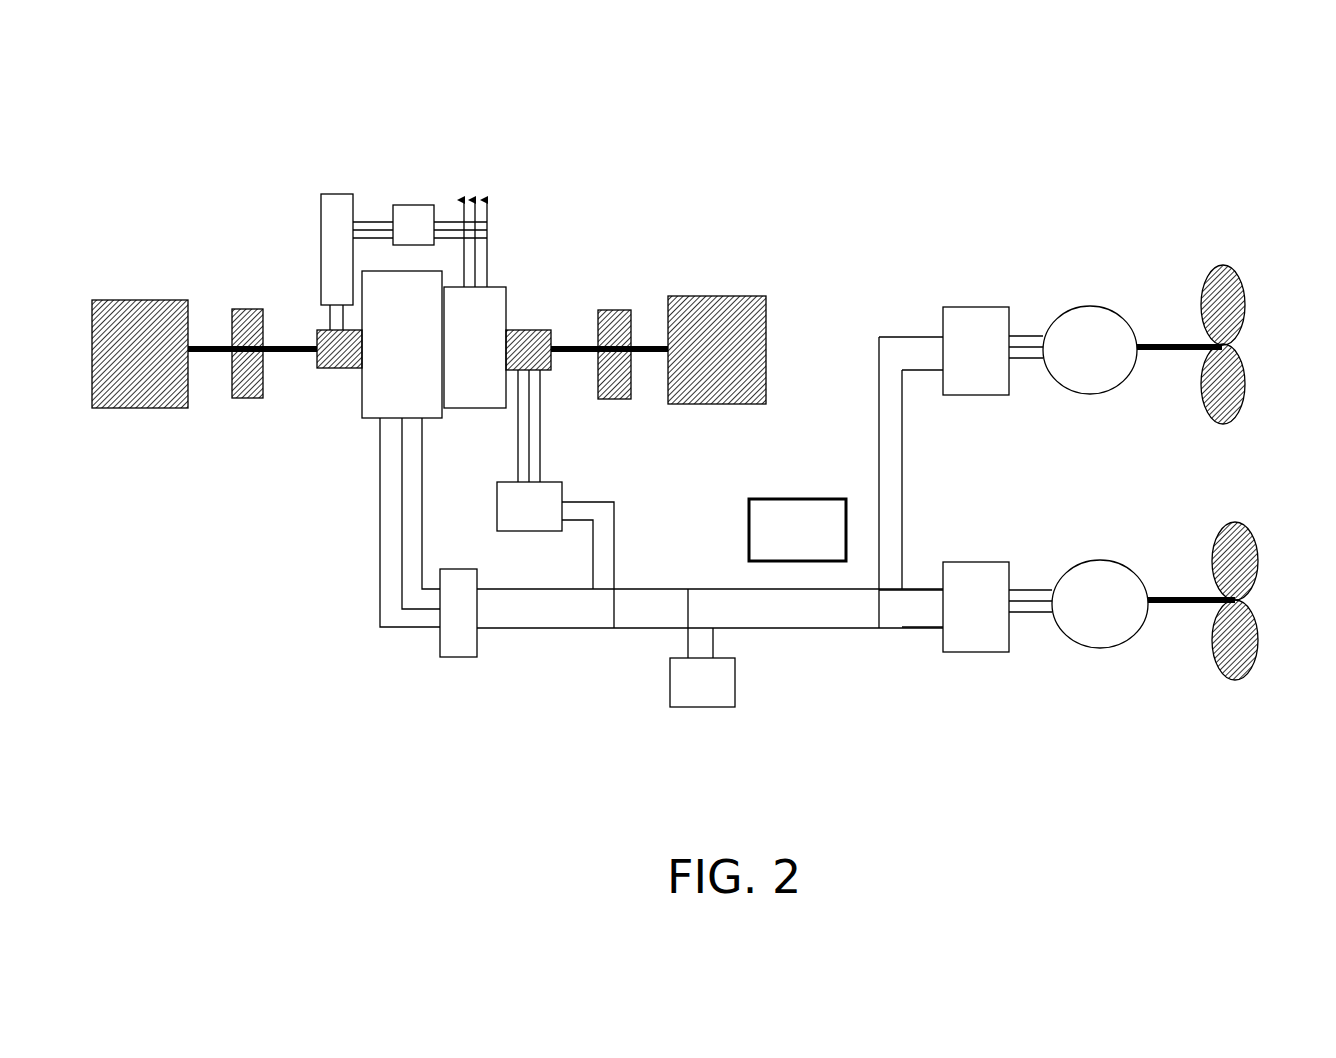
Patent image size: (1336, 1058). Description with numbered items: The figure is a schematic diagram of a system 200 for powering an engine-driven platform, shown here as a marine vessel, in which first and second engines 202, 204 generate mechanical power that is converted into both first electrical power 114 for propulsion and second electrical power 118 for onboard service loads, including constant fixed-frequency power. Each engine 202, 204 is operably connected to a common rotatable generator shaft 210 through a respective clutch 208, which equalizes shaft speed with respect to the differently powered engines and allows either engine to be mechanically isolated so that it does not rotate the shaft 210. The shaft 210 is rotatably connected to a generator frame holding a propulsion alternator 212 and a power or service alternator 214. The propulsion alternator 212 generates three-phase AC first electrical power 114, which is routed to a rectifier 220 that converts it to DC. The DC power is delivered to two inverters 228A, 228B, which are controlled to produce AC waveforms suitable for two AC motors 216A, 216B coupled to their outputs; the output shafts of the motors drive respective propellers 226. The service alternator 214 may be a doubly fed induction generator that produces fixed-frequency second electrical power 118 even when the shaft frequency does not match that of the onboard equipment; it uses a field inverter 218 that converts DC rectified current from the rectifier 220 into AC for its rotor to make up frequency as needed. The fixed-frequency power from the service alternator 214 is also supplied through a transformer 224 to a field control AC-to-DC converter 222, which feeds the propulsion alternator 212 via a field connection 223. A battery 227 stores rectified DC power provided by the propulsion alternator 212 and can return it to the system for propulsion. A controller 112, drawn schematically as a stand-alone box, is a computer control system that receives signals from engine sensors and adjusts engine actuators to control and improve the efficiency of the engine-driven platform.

The system 200 is at (850, 146).
The first engine 202 is at (700, 393).
The second engine 204 is at (117, 388).
The clutch 208 is at (247, 323).
The generator shaft 210 is at (298, 355).
The propulsion alternator 212 is at (363, 422).
The power or service alternator 214 is at (460, 395).
The field inverter 218 is at (557, 498).
The rectifier 220 is at (450, 642).
The field control AC-to-DC converter 222 is at (337, 200).
The field connection 223 is at (317, 332).
The transformer 224 is at (417, 208).
The propeller 226 is at (1225, 292).
The battery 227 is at (690, 692).
The inverter 228A is at (963, 385).
The inverter 228B is at (972, 640).
The AC motor 216A is at (1080, 380).
The AC motor 216B is at (1097, 628).
The controller 112 is at (797, 530).
The first electrical power 114 is at (377, 606).
The second electrical power 118 is at (490, 247).